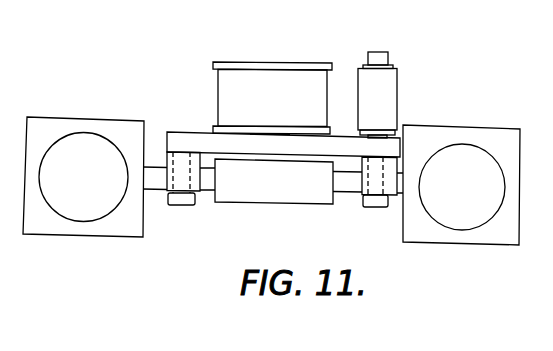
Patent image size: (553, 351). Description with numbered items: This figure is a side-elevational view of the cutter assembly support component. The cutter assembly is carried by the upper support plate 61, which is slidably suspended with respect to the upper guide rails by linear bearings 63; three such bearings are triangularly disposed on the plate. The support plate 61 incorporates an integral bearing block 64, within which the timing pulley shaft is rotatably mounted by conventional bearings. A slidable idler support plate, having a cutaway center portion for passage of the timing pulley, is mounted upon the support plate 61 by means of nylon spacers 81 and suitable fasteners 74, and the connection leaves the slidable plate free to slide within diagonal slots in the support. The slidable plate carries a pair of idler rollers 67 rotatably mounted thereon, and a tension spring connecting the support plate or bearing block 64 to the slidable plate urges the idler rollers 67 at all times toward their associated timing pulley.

The upper support plate 61 is at (507, 123).
The linear bearings 63 is at (322, 42).
The bearing block 64 is at (315, 203).
The idler rollers 67 is at (393, 93).
The fasteners 74 is at (195, 204).
The nylon spacers 81 is at (169, 157).